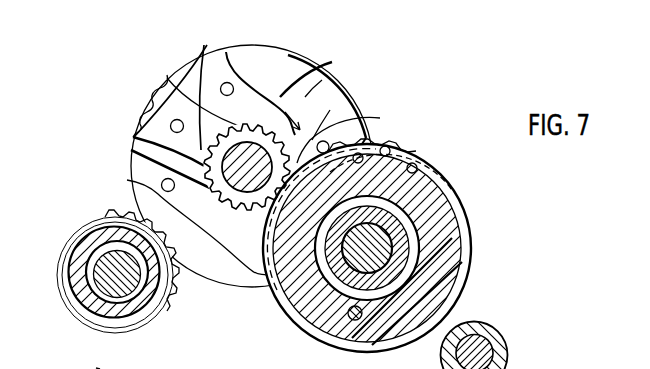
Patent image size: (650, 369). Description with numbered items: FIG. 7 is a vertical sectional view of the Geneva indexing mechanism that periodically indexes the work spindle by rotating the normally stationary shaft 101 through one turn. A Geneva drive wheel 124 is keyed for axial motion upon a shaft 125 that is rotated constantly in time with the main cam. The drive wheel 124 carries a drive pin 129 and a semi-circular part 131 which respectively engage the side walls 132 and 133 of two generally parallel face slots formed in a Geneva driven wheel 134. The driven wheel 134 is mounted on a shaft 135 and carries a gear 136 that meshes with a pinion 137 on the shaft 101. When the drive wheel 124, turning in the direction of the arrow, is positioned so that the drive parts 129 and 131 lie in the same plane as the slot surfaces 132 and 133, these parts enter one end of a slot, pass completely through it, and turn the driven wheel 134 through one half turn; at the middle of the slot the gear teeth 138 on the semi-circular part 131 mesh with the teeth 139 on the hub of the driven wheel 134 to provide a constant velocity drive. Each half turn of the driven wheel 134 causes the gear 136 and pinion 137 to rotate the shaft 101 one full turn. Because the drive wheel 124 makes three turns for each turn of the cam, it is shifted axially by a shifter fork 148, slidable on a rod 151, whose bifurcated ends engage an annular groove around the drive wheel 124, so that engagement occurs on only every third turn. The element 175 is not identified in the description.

The shaft 101 is at (103, 274).
The Geneva drive wheel 124 is at (427, 218).
The shaft 125 is at (383, 247).
The drive pin 129 is at (382, 143).
The semi-circular part 131 is at (448, 173).
The side wall 132 is at (330, 110).
The side wall 133 is at (271, 93).
The Geneva driven wheel 134 is at (300, 68).
The shaft 135 is at (246, 150).
The gear 136 is at (150, 111).
The pinion 137 is at (104, 235).
The gear teeth 138 is at (405, 160).
The teeth 139 is at (322, 80).
The shifter fork 148 is at (503, 351).
The rod 151 is at (483, 349).
The member 175 is at (88, 363).